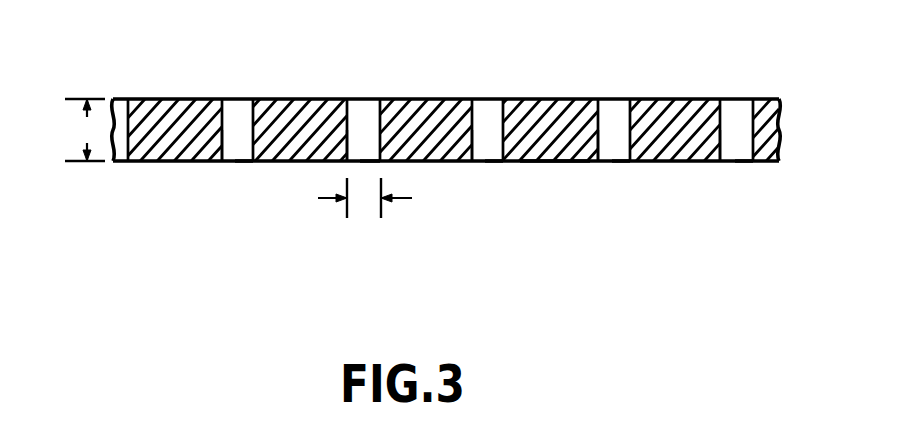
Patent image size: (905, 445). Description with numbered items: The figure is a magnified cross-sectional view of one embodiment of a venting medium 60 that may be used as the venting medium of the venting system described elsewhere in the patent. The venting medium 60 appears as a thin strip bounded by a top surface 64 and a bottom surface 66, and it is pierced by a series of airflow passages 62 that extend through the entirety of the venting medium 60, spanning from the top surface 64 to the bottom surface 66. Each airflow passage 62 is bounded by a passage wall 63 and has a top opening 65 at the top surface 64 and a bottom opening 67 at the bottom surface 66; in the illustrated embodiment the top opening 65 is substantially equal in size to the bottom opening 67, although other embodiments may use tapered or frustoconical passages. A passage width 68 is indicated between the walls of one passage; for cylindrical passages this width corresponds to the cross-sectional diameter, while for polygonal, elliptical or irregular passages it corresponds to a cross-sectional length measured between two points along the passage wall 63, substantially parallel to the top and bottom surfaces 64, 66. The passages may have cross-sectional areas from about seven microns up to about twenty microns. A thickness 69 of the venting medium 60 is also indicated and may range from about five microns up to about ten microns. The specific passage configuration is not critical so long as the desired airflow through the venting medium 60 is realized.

The venting medium 60 is at (453, 72).
The airflow passages 62 is at (232, 117).
The passage wall 63 is at (229, 148).
The top surface 64 is at (152, 98).
The top opening 65 is at (252, 98).
The bottom surface 66 is at (552, 163).
The bottom opening 67 is at (246, 163).
The passage width 68 is at (365, 198).
The thickness 69 is at (85, 130).